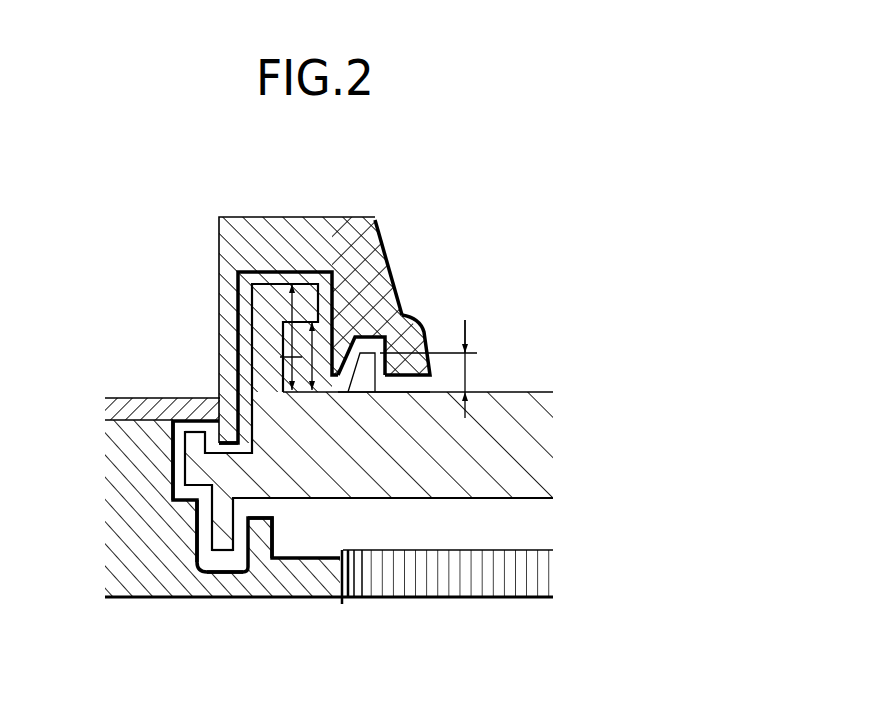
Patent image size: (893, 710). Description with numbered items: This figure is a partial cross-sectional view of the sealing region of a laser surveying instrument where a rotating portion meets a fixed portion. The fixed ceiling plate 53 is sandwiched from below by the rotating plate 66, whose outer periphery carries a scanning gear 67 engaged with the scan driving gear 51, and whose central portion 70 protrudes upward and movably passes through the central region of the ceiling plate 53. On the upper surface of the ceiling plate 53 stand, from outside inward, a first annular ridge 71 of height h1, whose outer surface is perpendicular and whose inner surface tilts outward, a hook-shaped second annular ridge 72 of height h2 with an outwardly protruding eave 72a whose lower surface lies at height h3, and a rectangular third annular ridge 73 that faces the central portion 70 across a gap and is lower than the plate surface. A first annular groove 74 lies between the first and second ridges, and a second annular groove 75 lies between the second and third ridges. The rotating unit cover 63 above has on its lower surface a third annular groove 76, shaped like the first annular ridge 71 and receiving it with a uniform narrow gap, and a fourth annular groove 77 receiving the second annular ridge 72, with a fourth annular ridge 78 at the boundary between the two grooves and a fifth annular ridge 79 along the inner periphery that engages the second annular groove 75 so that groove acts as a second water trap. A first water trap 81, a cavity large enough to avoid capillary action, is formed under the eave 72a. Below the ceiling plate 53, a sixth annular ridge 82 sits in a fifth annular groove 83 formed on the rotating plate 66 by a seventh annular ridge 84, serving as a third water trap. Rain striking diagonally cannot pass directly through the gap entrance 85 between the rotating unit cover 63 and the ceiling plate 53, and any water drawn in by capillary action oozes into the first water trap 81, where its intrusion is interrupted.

The scan driving gear 51 is at (464, 600).
The ceiling plate 53 is at (525, 392).
The rotating unit cover 63 is at (386, 250).
The rotating plate 66 is at (285, 598).
The scanning gear 67 is at (350, 578).
The central portion 70 is at (130, 450).
The first annular ridge 71 is at (425, 340).
The second annular ridge 72 is at (263, 285).
The eave 72a is at (335, 290).
The third annular ridge 73 is at (196, 432).
The first annular groove 74 is at (298, 390).
The second annular groove 75 is at (230, 442).
The third annular groove 76 is at (415, 320).
The fourth annular groove 77 is at (312, 300).
The fourth annular ridge 78 is at (340, 392).
The fifth annular ridge 79 is at (228, 433).
The first water trap 81 is at (214, 395).
The sixth annular ridge 82 is at (226, 552).
The fifth annular groove 83 is at (205, 562).
The seventh annular ridge 84 is at (273, 528).
The gap entrance 85 is at (405, 392).
The height of first annular ridge h1 is at (466, 372).
The height of second annular ridge h2 is at (293, 340).
The height of eave lower surface h3 is at (385, 300).